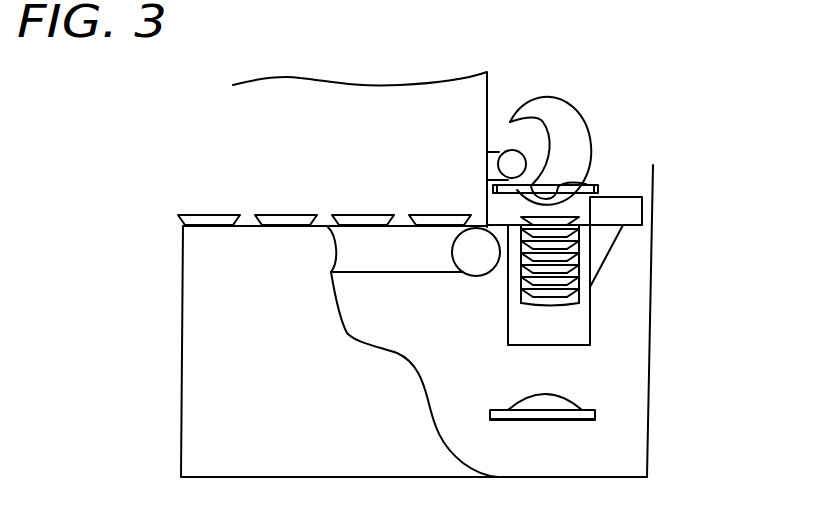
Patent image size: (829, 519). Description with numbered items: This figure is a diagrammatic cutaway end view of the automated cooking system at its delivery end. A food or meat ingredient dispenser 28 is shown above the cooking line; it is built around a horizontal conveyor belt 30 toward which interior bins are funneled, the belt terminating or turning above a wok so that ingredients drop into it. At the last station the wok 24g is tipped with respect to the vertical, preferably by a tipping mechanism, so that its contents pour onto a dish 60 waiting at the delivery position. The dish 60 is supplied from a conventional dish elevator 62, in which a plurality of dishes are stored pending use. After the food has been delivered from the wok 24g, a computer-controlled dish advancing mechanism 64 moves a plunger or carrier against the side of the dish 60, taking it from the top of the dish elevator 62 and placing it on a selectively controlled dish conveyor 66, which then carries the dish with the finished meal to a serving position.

The food or meat ingredient dispenser 28 is at (453, 143).
The horizontal conveyor belt 30 is at (517, 161).
The wok 24g is at (575, 143).
The dish advancing mechanism 64 is at (625, 215).
The dish conveyor 66 is at (472, 233).
The dish 60 is at (565, 277).
The dish elevator 62 is at (558, 325).